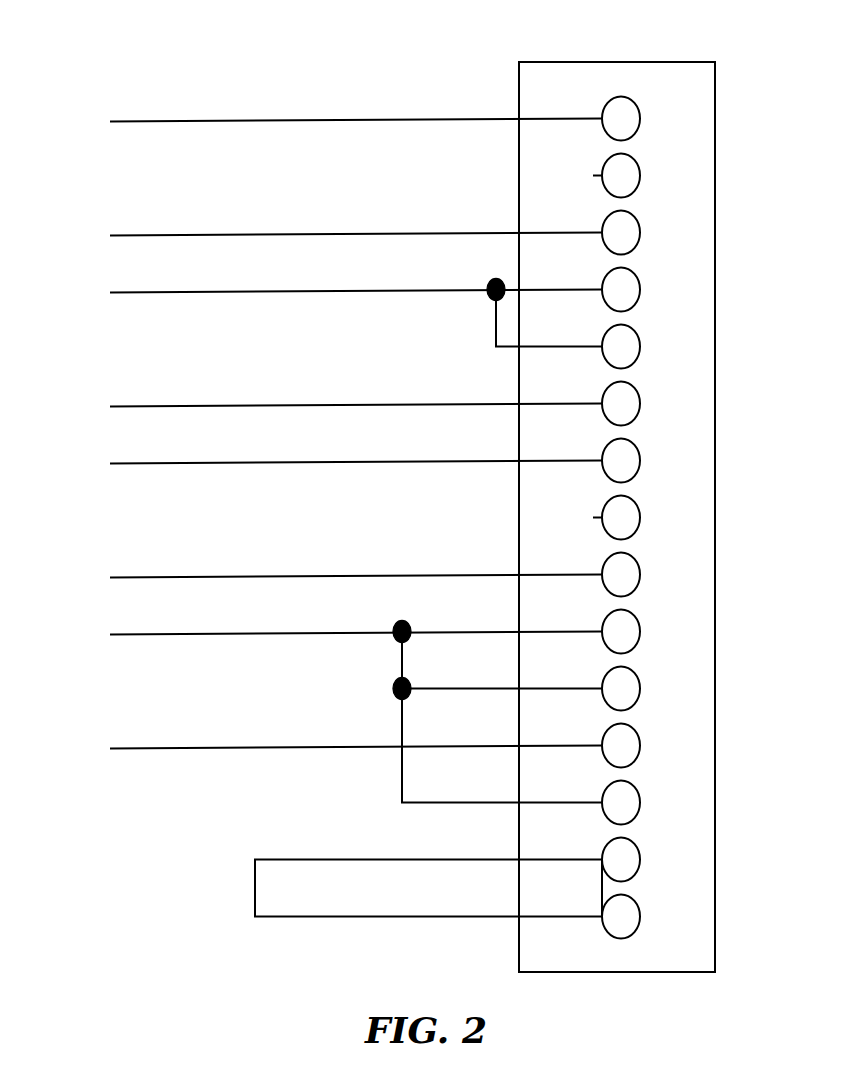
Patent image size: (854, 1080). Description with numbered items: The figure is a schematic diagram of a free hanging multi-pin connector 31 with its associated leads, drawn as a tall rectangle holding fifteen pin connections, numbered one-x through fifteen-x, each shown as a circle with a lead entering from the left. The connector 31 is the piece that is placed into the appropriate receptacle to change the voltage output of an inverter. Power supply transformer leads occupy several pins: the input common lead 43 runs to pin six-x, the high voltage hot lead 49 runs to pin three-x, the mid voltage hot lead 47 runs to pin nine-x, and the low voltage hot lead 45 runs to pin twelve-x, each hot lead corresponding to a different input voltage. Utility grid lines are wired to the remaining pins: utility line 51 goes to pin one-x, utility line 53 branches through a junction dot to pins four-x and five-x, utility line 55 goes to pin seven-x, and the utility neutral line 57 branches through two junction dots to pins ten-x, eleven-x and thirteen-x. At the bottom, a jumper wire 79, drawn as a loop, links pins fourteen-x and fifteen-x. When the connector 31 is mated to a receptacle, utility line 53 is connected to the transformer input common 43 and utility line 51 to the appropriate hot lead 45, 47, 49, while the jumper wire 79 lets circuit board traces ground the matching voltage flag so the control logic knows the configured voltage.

The multi-pin connector 31 is at (715, 62).
The utility line 51 is at (110, 122).
The high voltage hot lead 49 is at (110, 236).
The utility line 53 is at (110, 292).
The input common lead 43 is at (110, 406).
The utility line 55 is at (110, 464).
The mid voltage hot lead 47 is at (110, 578).
The utility neutral line 57 is at (110, 634).
The low voltage hot lead 45 is at (110, 748).
The jumper wire 79 is at (255, 886).